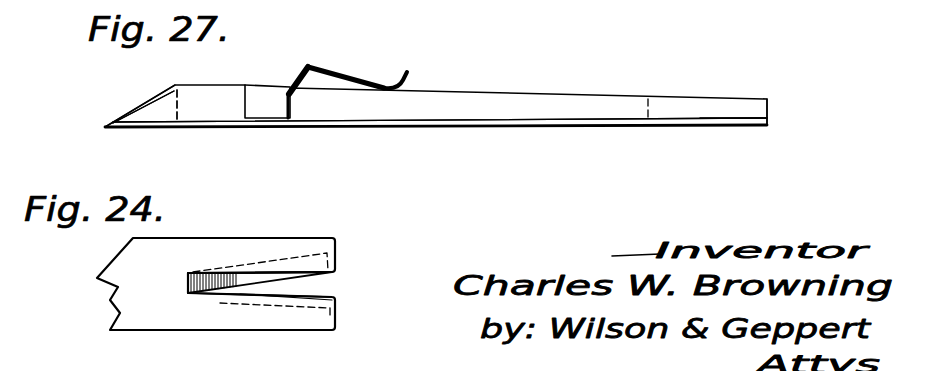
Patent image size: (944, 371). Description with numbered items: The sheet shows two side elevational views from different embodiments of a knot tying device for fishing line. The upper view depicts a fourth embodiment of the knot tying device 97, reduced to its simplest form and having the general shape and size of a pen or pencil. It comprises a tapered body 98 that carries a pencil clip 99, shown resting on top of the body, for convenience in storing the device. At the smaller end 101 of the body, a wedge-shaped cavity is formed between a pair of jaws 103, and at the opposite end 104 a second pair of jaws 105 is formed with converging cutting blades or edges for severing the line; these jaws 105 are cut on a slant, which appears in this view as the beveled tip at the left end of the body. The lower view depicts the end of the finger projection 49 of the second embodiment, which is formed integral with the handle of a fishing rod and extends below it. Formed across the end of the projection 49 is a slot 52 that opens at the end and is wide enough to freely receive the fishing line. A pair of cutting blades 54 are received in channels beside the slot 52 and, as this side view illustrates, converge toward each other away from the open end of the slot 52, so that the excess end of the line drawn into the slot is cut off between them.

In FIG. 27, the knot tying device 97 is at (475, 73).
In FIG. 27, the tapered body 98 is at (420, 110).
In FIG. 27, the spring clip 99 is at (320, 68).
In FIG. 27, the smaller end 101 is at (767, 111).
In FIG. 27, the jaws 103 is at (742, 112).
In FIG. 27, the opposite end 104 is at (190, 112).
In FIG. 27, the jaws 105 is at (152, 115).
In FIG. 24, the finger projection 49 is at (183, 253).
In FIG. 24, the slot 52 is at (320, 285).
In FIG. 24, the cutting blades 54 is at (238, 272).